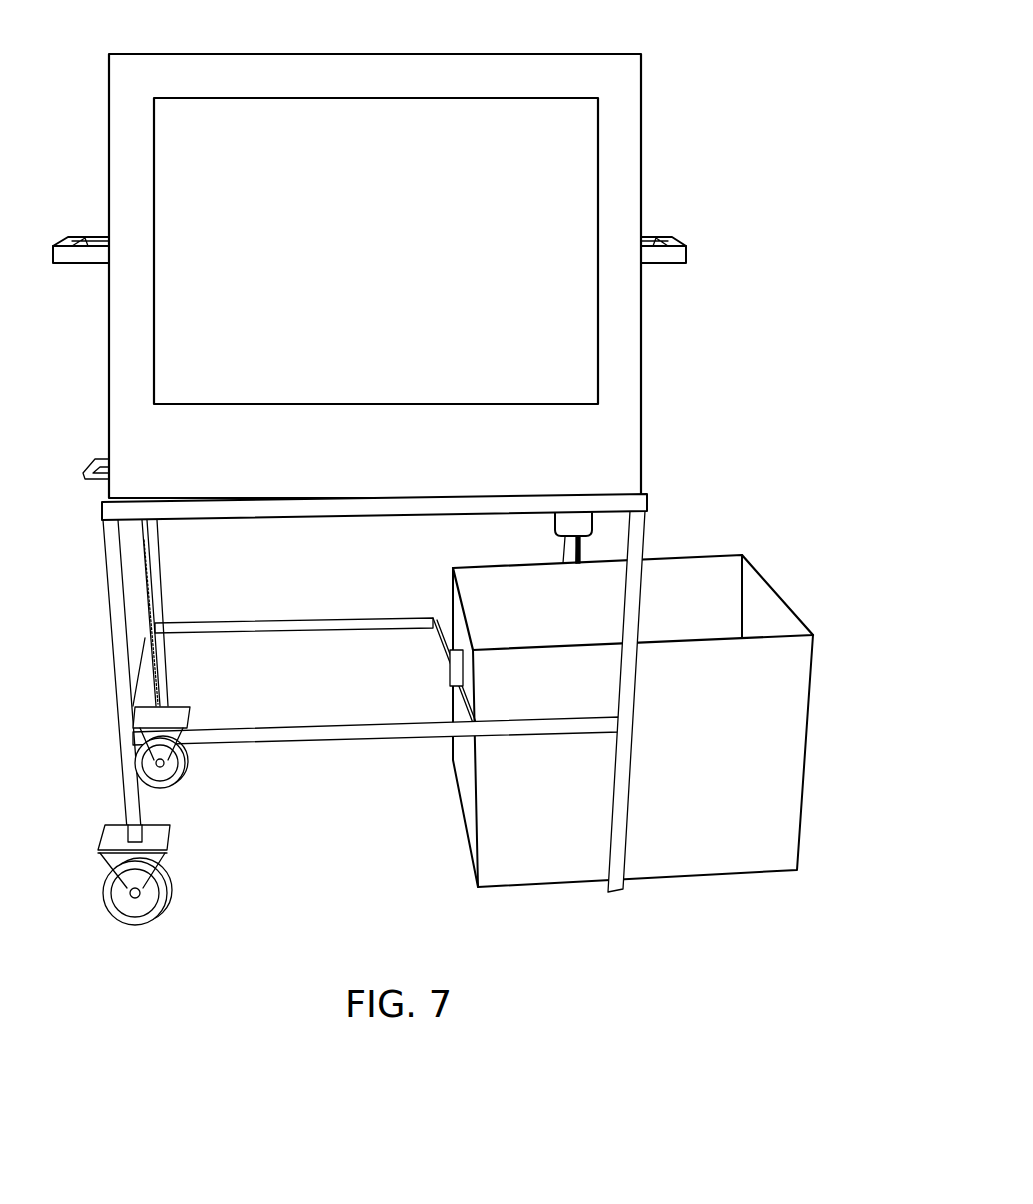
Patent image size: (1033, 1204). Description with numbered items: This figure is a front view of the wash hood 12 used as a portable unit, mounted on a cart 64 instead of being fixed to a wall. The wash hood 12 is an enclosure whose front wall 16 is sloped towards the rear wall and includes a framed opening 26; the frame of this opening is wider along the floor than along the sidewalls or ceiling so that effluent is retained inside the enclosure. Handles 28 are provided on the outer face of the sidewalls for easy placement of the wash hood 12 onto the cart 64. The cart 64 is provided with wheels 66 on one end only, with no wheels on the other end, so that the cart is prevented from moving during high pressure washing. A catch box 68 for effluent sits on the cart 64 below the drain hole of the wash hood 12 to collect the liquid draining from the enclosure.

The wash hood 12 is at (413, 276).
The front wall 16 is at (620, 440).
The framed opening 26 is at (154, 252).
The handles 28 is at (72, 264).
The cart 64 is at (328, 730).
The wheels 66 is at (186, 767).
The catch box 68 is at (818, 746).